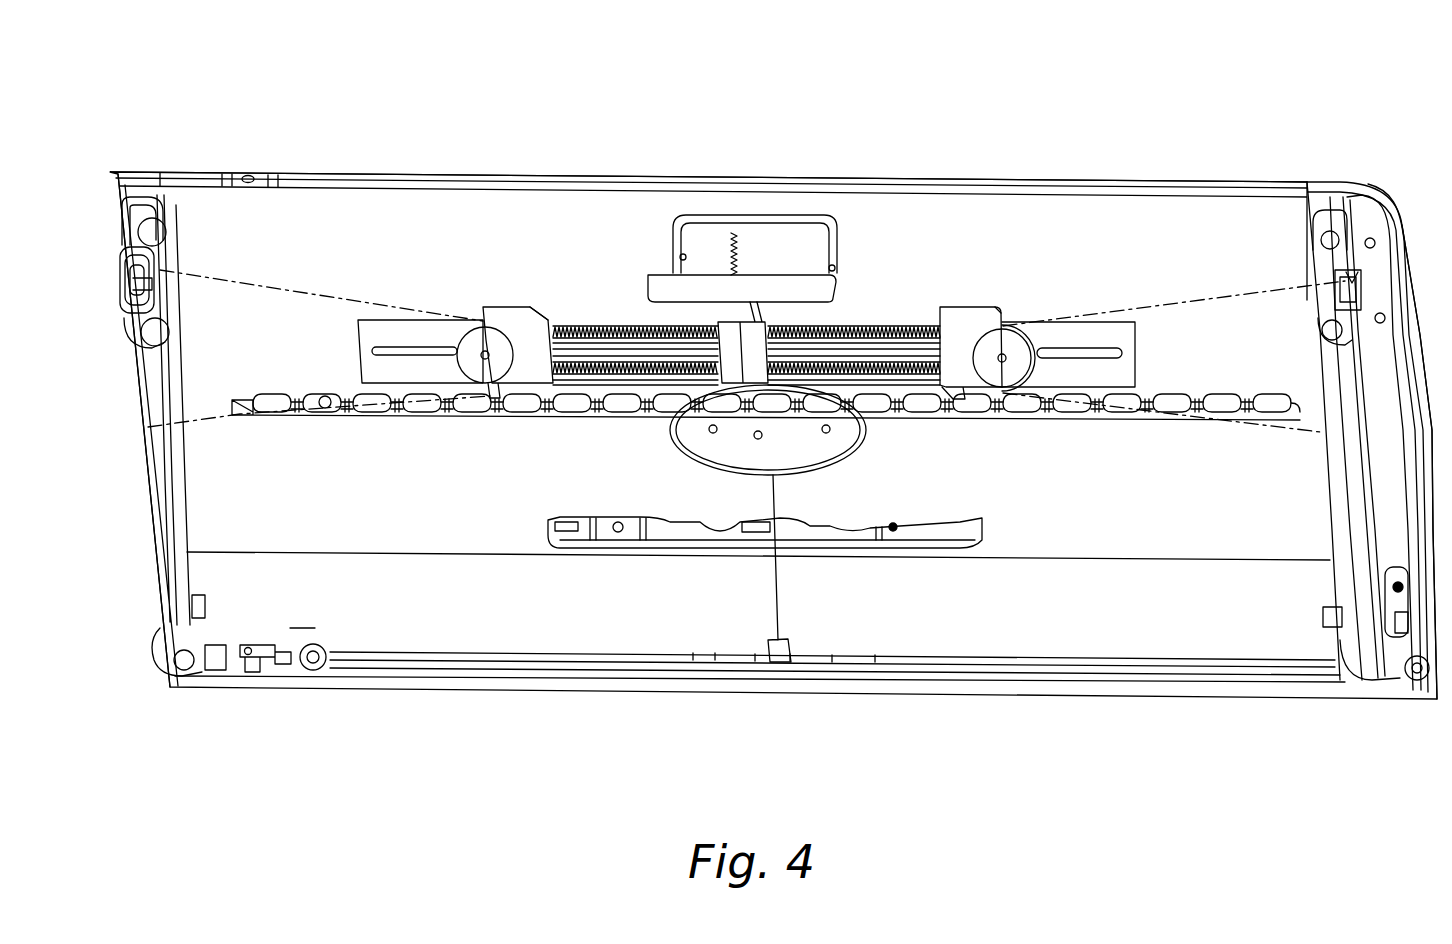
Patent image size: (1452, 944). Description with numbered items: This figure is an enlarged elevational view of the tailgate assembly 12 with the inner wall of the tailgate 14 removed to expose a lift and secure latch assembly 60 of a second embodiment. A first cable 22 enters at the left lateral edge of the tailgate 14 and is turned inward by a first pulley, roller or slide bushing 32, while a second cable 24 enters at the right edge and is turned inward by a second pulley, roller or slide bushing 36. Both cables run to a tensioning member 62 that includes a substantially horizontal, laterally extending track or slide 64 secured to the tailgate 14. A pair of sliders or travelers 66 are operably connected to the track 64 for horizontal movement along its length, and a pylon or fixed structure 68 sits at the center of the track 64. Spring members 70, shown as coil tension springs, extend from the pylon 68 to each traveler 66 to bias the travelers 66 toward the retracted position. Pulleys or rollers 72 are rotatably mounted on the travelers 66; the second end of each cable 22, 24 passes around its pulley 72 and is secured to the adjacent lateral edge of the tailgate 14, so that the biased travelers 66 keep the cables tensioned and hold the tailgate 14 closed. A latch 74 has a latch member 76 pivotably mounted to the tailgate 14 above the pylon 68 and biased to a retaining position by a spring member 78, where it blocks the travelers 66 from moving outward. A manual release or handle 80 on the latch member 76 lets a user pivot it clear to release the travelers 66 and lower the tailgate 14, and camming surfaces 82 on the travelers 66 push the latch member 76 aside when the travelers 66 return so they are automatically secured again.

The tailgate assembly 12 is at (1147, 170).
The tailgate 14 is at (1022, 176).
The first support member or cable 22 is at (327, 293).
The second support member or cable 24 is at (1210, 295).
The first pulley, roller or slide bushing 32 is at (163, 274).
The second pulley, roller or slide bushing 36 is at (1340, 283).
The lift and secure latch assembly 60 is at (576, 207).
The tensioning member 62 is at (912, 316).
The track or slide 64 is at (1127, 380).
The sliders or travelers 66 is at (500, 307).
The pylon or fixed structure 68 is at (688, 370).
The spring members 70 is at (627, 327).
The pulleys or rollers 72 is at (495, 304).
The latch 74 is at (768, 264).
The latch member 76 is at (829, 236).
The spring member 78 is at (734, 232).
The manual release or handle 80 is at (829, 215).
The camming surfaces 82 is at (542, 306).